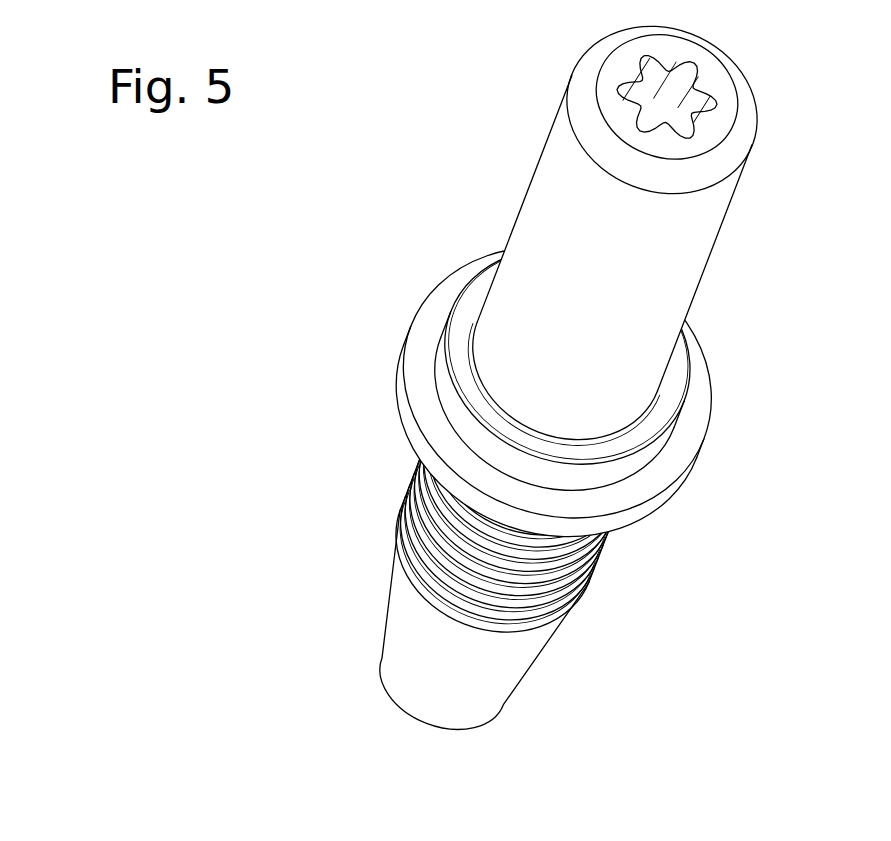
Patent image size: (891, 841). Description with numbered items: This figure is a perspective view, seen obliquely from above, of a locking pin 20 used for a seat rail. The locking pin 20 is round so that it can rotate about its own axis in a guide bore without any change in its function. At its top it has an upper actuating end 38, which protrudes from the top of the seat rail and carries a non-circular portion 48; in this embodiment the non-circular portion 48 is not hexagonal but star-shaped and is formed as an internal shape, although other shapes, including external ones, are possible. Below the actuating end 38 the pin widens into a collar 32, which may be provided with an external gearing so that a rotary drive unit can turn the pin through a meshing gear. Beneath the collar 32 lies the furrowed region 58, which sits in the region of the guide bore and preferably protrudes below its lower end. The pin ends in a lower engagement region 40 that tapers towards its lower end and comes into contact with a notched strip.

The locking pin 20 is at (732, 308).
The collar 32 is at (697, 448).
The upper actuating end 38 is at (583, 78).
The lower engagement region 40 is at (517, 693).
The non-circular portion 48 is at (693, 96).
The furrowed region 58 is at (590, 582).